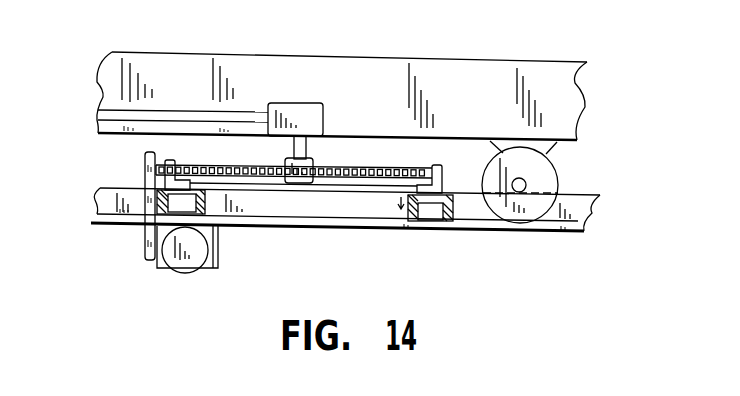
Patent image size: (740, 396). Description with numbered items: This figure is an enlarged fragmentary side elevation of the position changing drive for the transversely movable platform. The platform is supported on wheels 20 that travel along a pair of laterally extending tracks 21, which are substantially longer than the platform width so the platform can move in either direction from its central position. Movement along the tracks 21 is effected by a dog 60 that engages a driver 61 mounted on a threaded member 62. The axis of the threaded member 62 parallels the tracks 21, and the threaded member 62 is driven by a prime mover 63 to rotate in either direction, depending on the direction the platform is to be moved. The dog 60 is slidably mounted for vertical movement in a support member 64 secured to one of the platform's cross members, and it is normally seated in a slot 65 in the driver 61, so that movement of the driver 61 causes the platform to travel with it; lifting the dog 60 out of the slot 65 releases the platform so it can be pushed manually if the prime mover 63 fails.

The wheels 20 is at (557, 178).
The tracks 21 is at (582, 218).
The dog 60 is at (303, 185).
The driver 61 is at (313, 163).
The threaded member 62 is at (393, 170).
The prime mover 63 is at (184, 273).
The support member 64 is at (318, 128).
The slot 65 is at (287, 160).